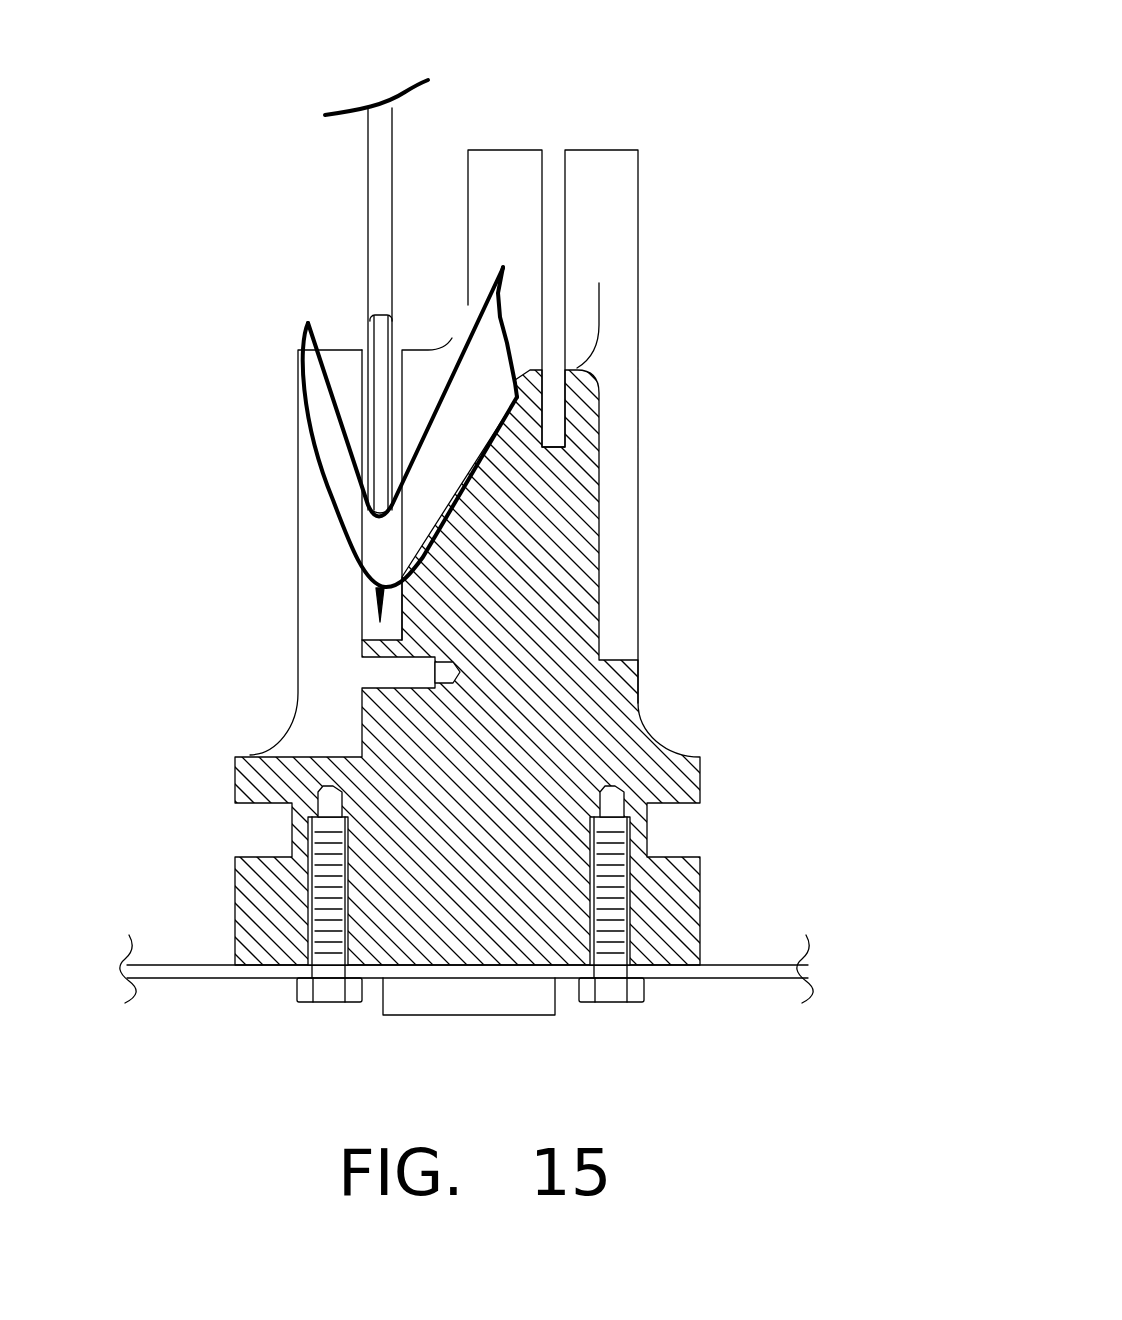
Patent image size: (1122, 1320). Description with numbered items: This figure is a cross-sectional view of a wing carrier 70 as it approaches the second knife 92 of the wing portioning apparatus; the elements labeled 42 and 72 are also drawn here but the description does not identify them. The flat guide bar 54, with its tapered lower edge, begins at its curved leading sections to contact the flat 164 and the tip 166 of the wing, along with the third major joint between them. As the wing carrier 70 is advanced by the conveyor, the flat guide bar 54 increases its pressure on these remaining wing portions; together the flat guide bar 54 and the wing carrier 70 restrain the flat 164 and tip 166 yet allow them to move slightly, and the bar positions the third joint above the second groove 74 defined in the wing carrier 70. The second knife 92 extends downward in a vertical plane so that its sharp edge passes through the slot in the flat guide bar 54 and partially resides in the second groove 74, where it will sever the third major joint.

The strip 42 is at (372, 183).
The flat guide bar 54 is at (364, 342).
The wing carrier 70 is at (703, 478).
The tube 72 is at (548, 170).
The second groove 74 is at (365, 622).
The second knife 92 is at (381, 413).
The flat 164 is at (505, 302).
The tip 166 is at (348, 442).